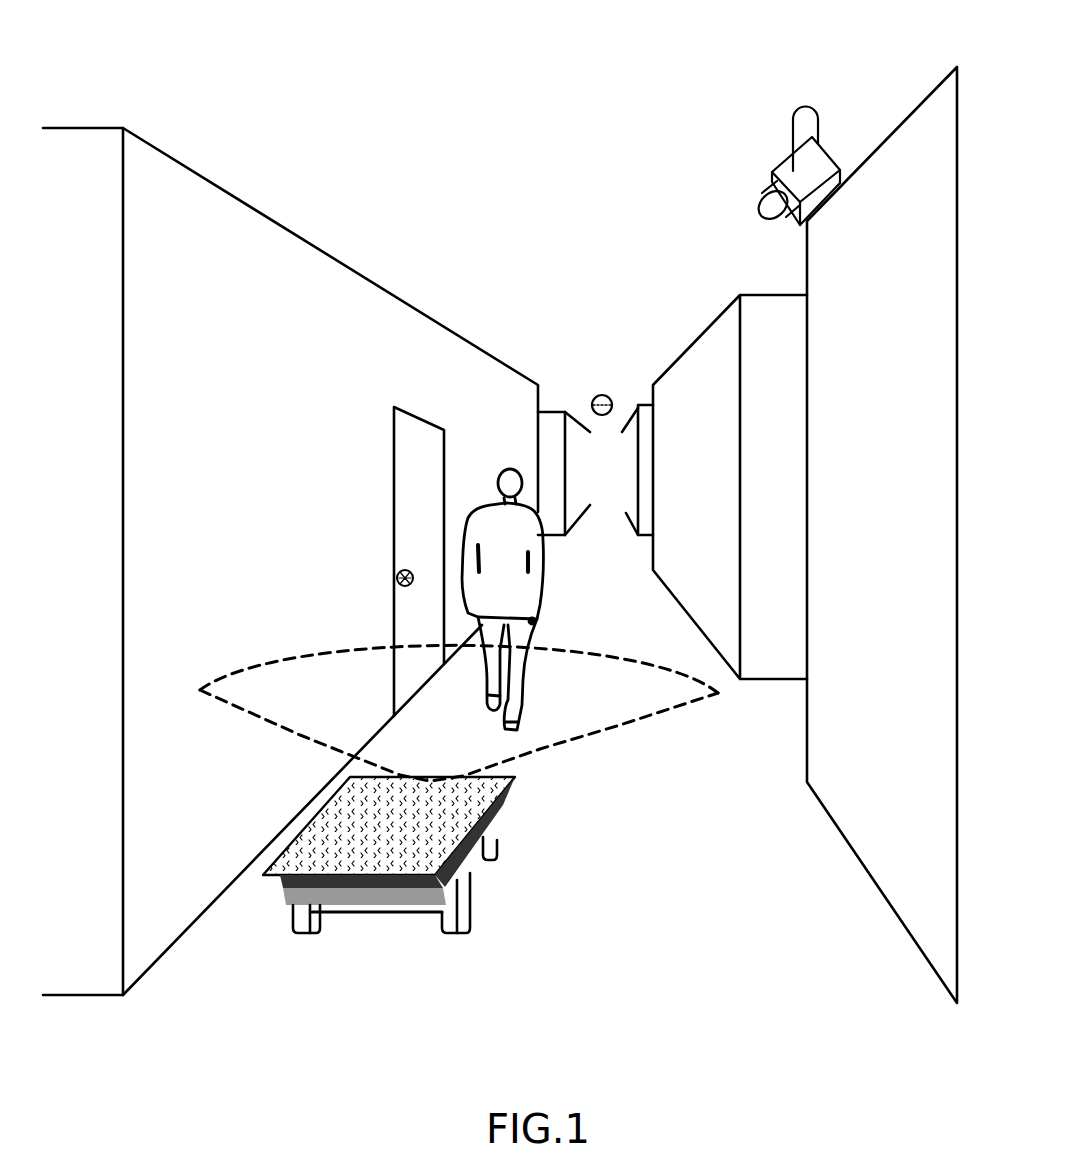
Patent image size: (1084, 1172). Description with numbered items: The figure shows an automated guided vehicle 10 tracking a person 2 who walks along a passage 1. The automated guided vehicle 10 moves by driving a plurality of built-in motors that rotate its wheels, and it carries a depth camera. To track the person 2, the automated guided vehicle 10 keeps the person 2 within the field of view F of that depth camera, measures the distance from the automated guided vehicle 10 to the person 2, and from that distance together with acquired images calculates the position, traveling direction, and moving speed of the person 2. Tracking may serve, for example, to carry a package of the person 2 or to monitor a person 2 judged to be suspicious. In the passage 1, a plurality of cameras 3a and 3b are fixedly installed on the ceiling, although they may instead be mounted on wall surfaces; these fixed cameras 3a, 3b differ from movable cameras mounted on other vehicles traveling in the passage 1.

The passage 1 is at (592, 896).
The person 2 is at (513, 474).
The camera 3a is at (825, 152).
The camera 3b is at (602, 392).
The automated guided vehicle 10 is at (383, 897).
The field of view F is at (603, 700).